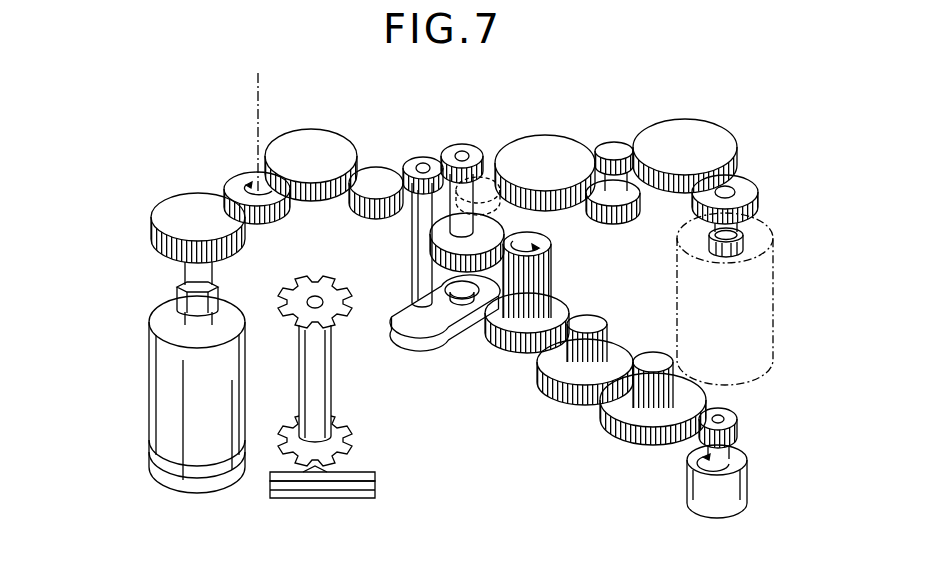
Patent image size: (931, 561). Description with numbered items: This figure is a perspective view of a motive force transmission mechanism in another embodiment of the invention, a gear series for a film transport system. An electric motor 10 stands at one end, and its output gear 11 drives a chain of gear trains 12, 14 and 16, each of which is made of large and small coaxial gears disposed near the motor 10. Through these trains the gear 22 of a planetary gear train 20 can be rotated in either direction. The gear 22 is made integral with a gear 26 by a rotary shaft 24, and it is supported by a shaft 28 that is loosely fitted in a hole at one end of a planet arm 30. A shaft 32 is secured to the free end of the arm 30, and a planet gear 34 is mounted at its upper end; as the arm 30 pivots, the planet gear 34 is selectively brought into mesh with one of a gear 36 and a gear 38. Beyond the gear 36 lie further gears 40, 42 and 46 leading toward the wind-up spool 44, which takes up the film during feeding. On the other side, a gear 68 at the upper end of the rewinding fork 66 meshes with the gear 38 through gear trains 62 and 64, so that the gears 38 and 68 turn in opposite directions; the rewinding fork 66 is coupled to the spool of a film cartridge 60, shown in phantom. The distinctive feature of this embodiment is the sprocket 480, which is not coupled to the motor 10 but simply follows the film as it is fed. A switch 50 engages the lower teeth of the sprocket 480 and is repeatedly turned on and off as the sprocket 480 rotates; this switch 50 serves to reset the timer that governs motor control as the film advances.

The electric motor 10 is at (687, 485).
The output gear 11 is at (738, 428).
The gear train 12 is at (706, 397).
The gear train 14 is at (613, 333).
The gear train 16 is at (540, 312).
The planetary gear train 20 is at (410, 262).
The gear 22 is at (482, 221).
The rotary shaft 24 is at (460, 224).
The gear 26 is at (462, 143).
The shaft 28 is at (458, 299).
The planet arm 30 is at (415, 326).
The shaft 32 is at (418, 247).
The planet gear 34 is at (422, 157).
The gear 36 is at (378, 167).
The gear 38 is at (548, 135).
The gear 40 is at (317, 130).
The gear 42 is at (232, 176).
The wind-up spool 44 is at (148, 400).
The gear 46 is at (153, 217).
The sprocket 480 is at (330, 393).
The switch 50 is at (313, 493).
The film cartridge 60 is at (773, 290).
The gear train 62 is at (607, 142).
The gear train 64 is at (675, 118).
The rewinding fork 66 is at (741, 236).
The gear 68 is at (748, 177).